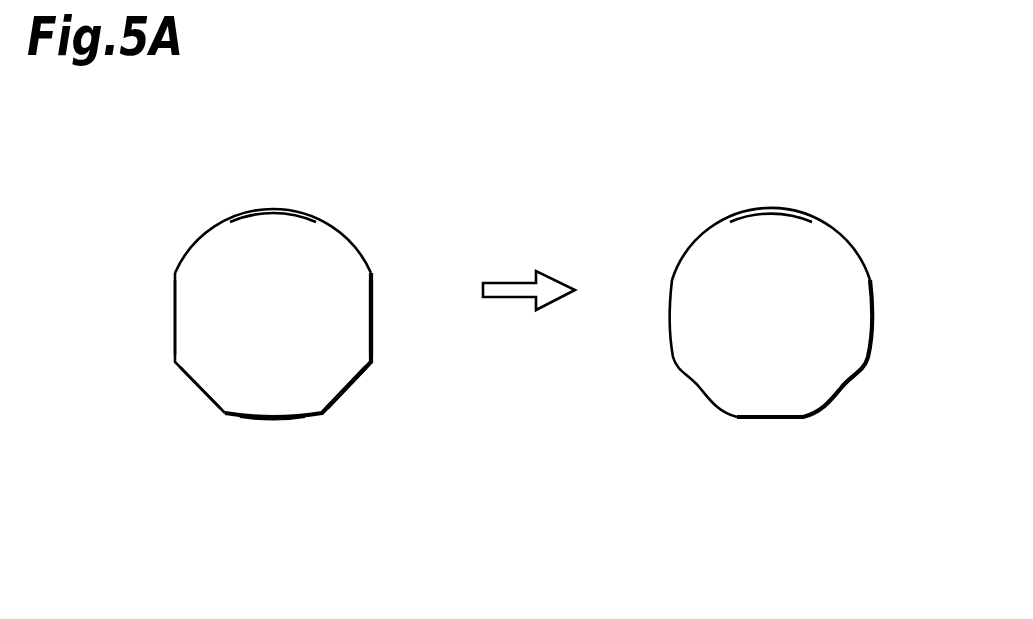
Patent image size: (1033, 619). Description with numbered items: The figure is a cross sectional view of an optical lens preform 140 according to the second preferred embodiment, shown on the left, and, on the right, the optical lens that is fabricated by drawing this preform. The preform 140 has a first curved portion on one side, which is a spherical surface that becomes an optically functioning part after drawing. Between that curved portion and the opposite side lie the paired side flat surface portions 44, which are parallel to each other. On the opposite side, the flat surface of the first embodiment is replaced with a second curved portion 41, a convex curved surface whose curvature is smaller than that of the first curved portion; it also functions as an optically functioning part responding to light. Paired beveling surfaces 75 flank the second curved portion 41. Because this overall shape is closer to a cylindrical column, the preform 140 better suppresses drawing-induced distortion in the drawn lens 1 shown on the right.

The optical lens preform 140 is at (359, 193).
The bent tube 1 is at (855, 194).
The side flat surface portions 44 is at (174, 292).
The beveling surfaces 75 is at (195, 384).
The second curved portion 41 is at (284, 419).